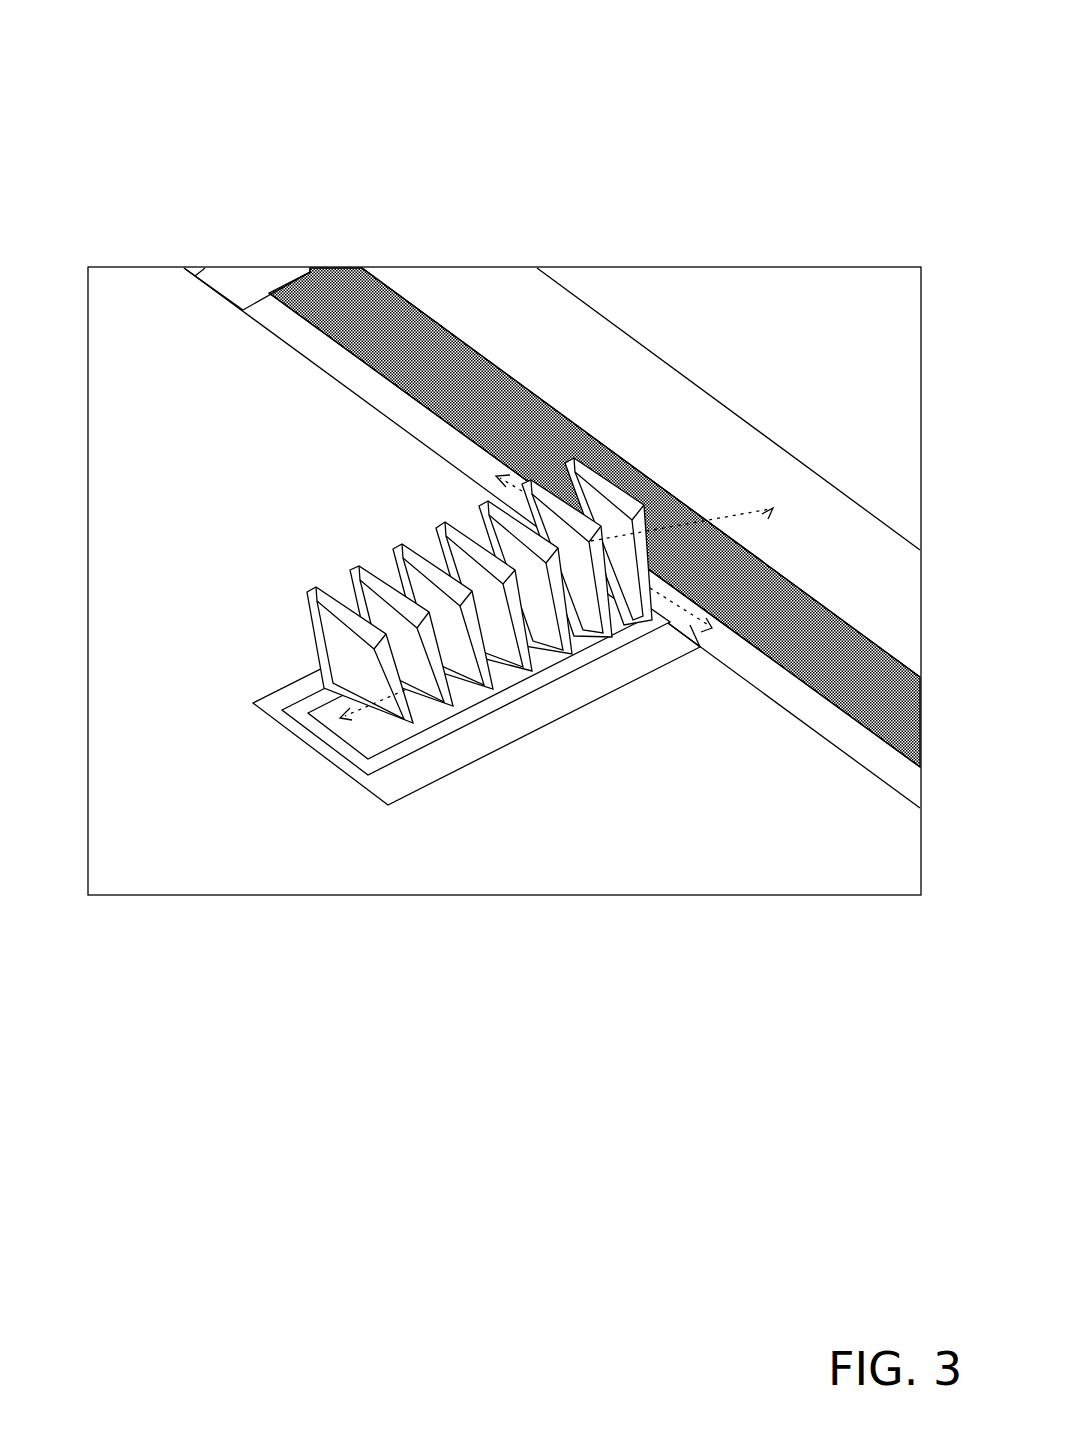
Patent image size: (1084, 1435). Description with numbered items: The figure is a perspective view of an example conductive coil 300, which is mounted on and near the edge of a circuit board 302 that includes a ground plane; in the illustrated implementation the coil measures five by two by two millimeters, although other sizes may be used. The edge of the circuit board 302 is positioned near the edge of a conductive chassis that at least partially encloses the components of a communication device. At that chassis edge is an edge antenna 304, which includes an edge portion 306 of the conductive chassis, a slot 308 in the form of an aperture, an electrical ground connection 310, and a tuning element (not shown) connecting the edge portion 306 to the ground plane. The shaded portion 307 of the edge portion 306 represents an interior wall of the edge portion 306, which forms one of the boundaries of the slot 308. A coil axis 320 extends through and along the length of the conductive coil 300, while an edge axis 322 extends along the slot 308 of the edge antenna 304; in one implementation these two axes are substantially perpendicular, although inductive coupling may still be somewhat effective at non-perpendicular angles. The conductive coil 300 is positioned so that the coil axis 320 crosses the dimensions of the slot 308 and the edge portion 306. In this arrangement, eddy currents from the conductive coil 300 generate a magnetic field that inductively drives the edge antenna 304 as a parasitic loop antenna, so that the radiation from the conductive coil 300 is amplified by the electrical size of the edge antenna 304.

The conductive coil 300 is at (318, 542).
The circuit board 302 is at (235, 835).
The edge antenna 304 is at (205, 148).
The edge portion 306 is at (488, 308).
The shaded portion 307 is at (374, 318).
The slot 308 is at (316, 347).
The electrical ground connection 310 is at (245, 285).
The coil axis 320 is at (708, 540).
The edge axis 322 is at (690, 625).